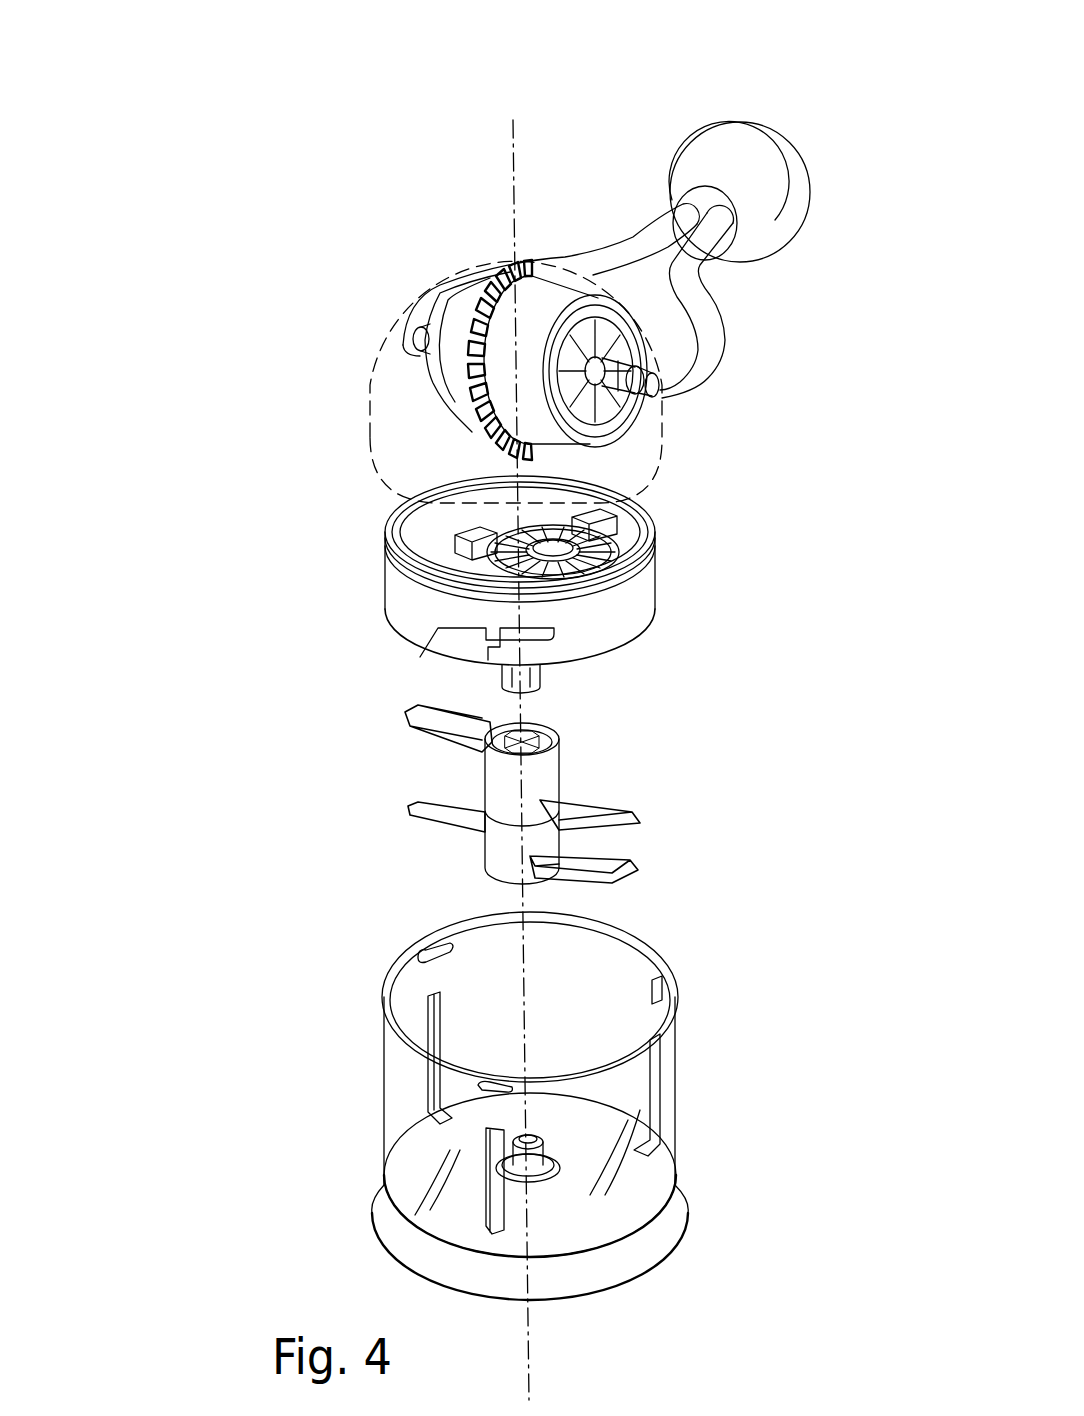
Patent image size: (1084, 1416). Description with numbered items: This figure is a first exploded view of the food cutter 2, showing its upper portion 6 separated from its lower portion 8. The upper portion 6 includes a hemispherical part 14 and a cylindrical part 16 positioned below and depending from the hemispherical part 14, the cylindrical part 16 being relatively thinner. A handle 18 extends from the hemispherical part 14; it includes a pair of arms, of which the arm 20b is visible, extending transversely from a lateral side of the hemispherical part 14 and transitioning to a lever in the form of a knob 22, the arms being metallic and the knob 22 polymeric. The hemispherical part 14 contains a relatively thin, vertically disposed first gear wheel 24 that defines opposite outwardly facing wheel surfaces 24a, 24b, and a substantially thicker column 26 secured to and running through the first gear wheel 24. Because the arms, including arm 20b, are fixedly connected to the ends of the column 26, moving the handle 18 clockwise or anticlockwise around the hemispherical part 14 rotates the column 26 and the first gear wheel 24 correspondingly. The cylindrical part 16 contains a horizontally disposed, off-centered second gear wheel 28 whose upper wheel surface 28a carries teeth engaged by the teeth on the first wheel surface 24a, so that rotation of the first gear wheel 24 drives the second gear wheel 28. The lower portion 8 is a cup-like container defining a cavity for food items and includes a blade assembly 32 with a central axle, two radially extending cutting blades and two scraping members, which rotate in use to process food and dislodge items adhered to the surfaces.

The food cutter 2 is at (231, 119).
The upper portion 6 is at (140, 247).
The lower portion 8 is at (737, 727).
The hemispherical part 14 is at (395, 318).
The cylindrical part 16 is at (385, 590).
The handle 18 is at (842, 128).
The arm 20b is at (710, 340).
The knob 22 is at (735, 155).
The first gear wheel 24 is at (452, 409).
The first wheel surface 24a is at (458, 396).
The second wheel surface 24b is at (450, 405).
The column 26 is at (467, 300).
The second gear wheel 28 is at (655, 546).
The upper wheel surface 28a is at (640, 522).
The blade assembly 32 is at (662, 750).